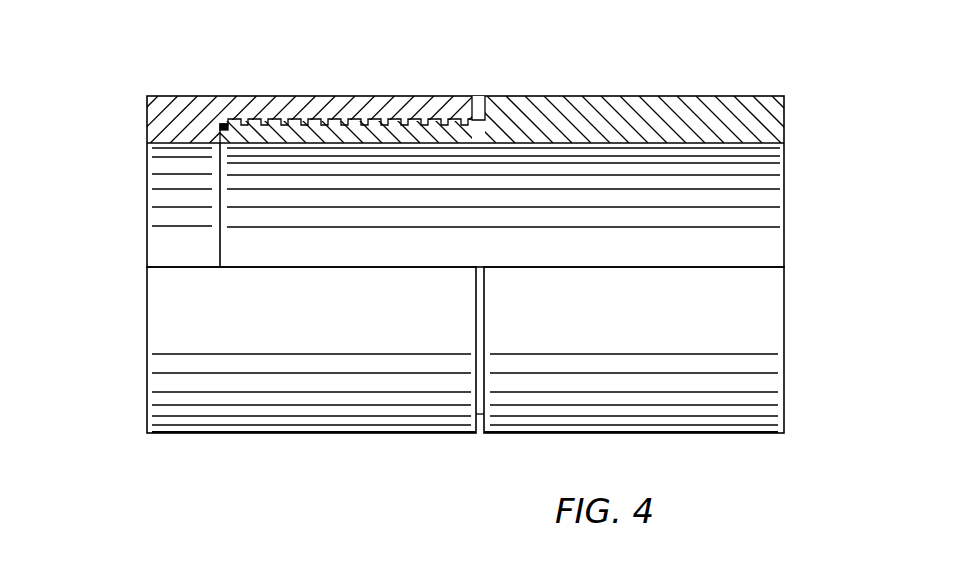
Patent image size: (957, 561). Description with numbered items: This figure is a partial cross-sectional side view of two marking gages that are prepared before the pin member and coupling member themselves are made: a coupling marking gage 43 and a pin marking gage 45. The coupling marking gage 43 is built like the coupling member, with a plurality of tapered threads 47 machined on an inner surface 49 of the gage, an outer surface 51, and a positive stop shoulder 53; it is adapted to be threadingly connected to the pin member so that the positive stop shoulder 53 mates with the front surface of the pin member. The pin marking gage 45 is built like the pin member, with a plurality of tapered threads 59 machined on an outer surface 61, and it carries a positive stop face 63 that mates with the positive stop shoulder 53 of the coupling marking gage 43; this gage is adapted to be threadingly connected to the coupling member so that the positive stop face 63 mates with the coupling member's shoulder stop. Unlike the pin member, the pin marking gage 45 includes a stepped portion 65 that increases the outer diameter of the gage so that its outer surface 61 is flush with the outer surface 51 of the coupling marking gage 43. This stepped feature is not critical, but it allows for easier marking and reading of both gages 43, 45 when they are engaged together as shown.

The coupling marking gage 43 is at (187, 373).
The pin marking gage 45 is at (730, 373).
The tapered threads 47 is at (253, 118).
The inner surface 49 is at (180, 197).
The outer surface 51 is at (177, 96).
The positive stop shoulder 53 is at (233, 132).
The tapered threads 59 is at (412, 115).
The outer surface 61 is at (742, 96).
The positive stop face 63 is at (233, 132).
The stepped portion 65 is at (487, 110).